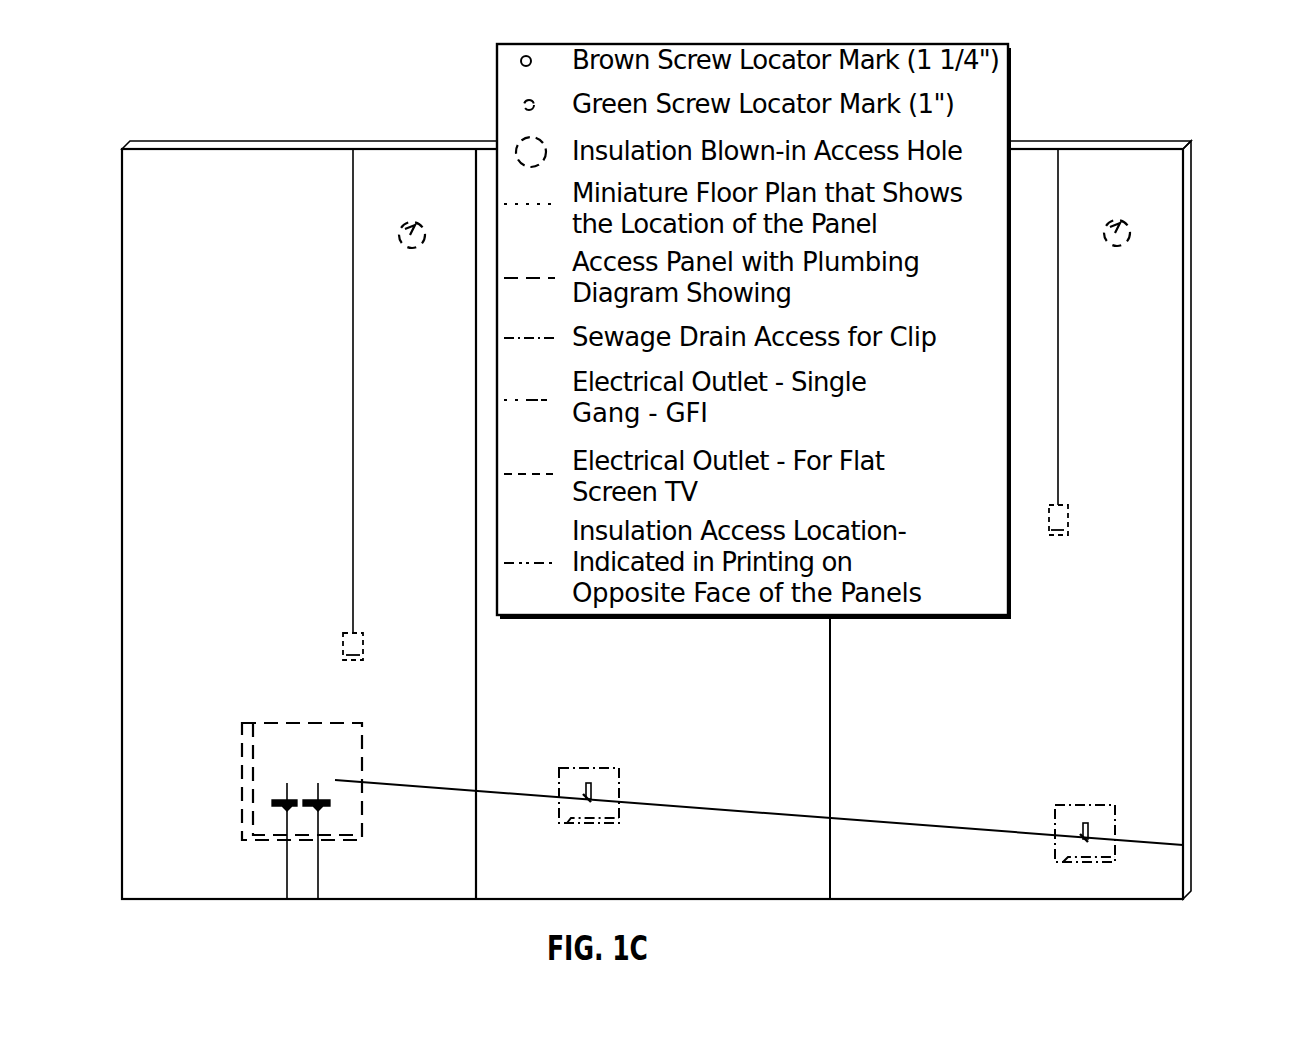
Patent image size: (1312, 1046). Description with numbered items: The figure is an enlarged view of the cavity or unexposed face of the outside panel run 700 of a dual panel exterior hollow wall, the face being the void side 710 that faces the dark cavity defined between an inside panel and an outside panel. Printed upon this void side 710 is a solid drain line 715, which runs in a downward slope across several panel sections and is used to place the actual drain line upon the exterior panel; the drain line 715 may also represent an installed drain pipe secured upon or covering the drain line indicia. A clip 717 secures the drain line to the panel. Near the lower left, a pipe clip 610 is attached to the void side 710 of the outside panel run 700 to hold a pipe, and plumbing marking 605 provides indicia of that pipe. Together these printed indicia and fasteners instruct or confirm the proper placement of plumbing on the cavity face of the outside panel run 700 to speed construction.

The outside panel run 700 is at (1190, 384).
The void side 710 is at (326, 462).
The drain line 715 is at (496, 786).
The clip 717 is at (602, 772).
The pipe clip 610 is at (272, 805).
The plumbing marking 605 is at (286, 892).